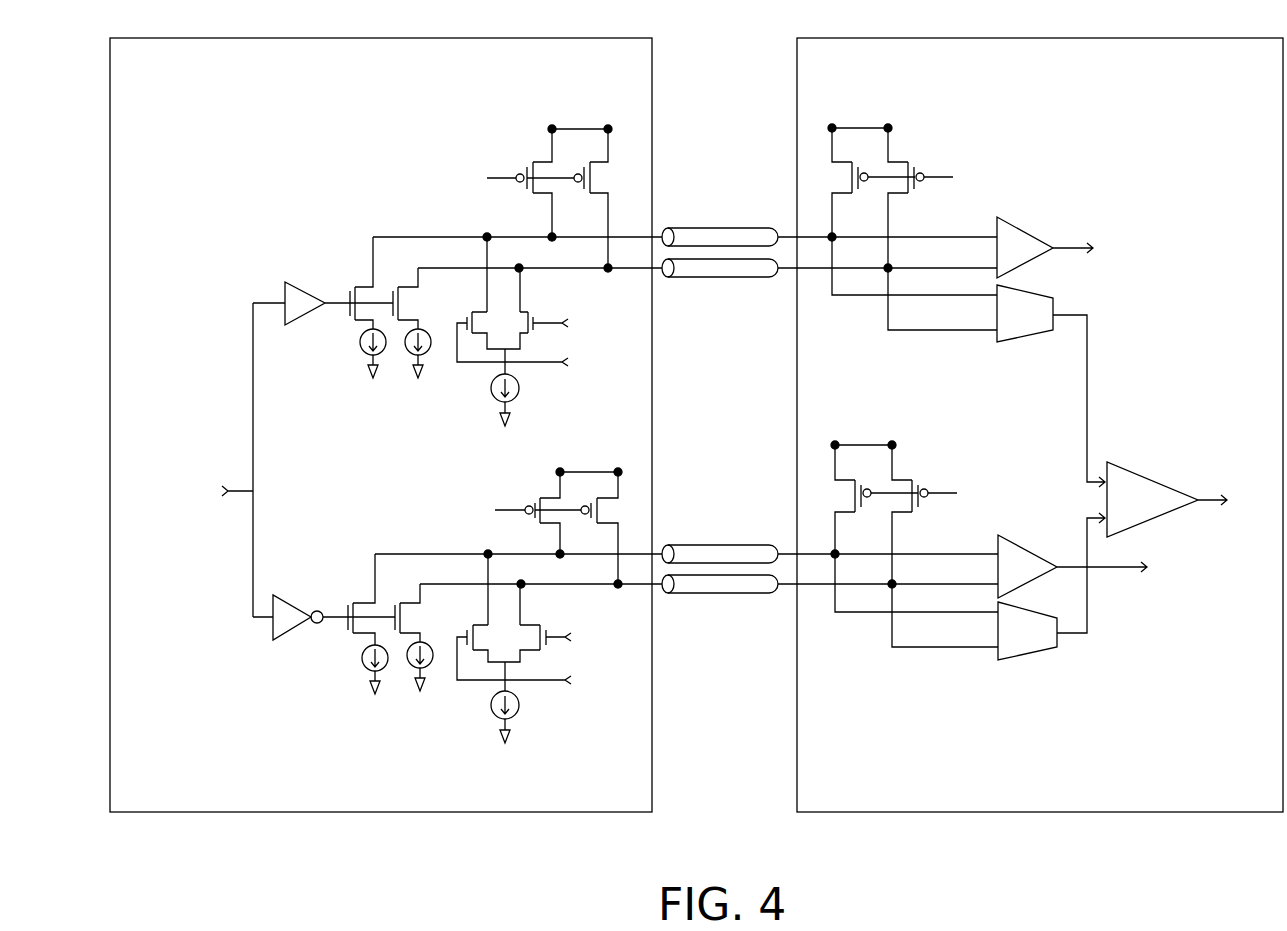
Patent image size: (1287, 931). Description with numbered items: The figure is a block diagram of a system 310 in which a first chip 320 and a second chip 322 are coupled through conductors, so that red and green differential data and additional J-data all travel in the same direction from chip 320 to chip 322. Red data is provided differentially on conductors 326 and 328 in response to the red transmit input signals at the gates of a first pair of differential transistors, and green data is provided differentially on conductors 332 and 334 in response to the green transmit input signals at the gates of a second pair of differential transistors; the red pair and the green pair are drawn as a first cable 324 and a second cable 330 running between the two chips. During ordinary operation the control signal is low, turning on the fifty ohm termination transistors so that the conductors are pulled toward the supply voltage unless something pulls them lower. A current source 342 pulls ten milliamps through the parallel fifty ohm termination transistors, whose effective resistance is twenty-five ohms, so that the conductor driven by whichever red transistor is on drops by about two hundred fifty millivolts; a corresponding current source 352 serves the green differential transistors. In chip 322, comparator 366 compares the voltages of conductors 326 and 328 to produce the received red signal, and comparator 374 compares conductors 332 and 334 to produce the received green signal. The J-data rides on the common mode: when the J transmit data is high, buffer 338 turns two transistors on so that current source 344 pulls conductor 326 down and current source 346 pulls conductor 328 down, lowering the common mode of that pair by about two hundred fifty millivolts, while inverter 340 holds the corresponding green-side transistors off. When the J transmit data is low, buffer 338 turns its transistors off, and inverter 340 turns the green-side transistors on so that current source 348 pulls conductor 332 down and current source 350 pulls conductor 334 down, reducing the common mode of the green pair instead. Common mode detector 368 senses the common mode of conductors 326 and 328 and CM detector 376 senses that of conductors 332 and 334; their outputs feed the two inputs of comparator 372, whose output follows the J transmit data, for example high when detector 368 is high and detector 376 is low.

The system 310 is at (279, 842).
The chip 320 is at (199, 87).
The chip 322 is at (1267, 87).
The first twisted pair cable 324 is at (713, 88).
The conductor 326 is at (692, 228).
The conductor 328 is at (690, 280).
The second twisted pair cable 330 is at (715, 765).
The conductor 332 is at (697, 545).
The conductor 334 is at (690, 597).
The buffer 338 is at (298, 284).
The inverter 340 is at (293, 637).
The current source 342 is at (490, 398).
The current source 344 is at (362, 347).
The current source 346 is at (406, 353).
The current source 348 is at (362, 665).
The current source 350 is at (406, 668).
The 10mA current source 352 is at (491, 703).
The comparator 366 is at (1015, 222).
The common mode detector 368 is at (1047, 297).
The comparator 372 is at (1138, 474).
The comparator 374 is at (1010, 537).
The common mode detector 376 is at (1010, 660).